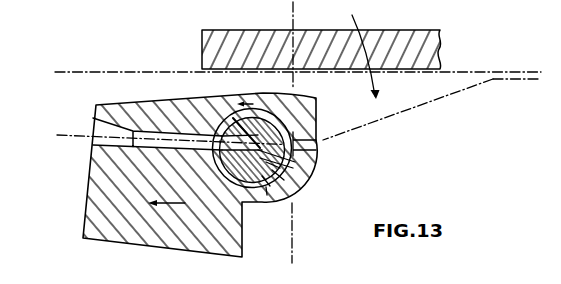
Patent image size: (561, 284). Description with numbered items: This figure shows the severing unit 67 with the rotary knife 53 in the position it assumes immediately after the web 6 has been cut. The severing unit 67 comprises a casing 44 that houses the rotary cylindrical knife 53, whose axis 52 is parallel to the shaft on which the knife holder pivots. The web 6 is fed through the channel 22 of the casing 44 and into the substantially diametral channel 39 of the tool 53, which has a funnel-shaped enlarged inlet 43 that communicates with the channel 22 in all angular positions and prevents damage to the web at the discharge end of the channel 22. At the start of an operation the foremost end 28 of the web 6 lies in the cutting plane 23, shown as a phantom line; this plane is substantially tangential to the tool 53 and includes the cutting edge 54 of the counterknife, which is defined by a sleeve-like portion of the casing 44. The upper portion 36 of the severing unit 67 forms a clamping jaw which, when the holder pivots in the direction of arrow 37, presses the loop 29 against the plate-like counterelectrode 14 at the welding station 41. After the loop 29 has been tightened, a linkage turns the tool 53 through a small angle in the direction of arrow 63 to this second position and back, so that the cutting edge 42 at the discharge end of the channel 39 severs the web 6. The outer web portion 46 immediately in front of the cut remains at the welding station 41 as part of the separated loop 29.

The web 6 is at (61, 137).
The counterelectrode 14 is at (438, 45).
The channel 22 is at (105, 130).
The cutting plane 23 is at (294, 251).
The foremost end 28 is at (519, 78).
The loop 29 is at (57, 72).
The upper portion 36 is at (294, 28).
The arrow 37 is at (168, 205).
The diametral channel 39 is at (284, 122).
The welding station 41 is at (358, 49).
The cutting edge 42 is at (309, 141).
The funnel-shaped enlarged inlet 43 is at (284, 180).
The casing 44 is at (267, 195).
The outer web portion 46 is at (390, 118).
The axis 52 is at (280, 168).
The rotary cylindrical knife 53 is at (270, 186).
The cutting edge of the counterknife 54 is at (294, 163).
The arrow 63 is at (234, 100).
The severing unit 67 is at (92, 217).